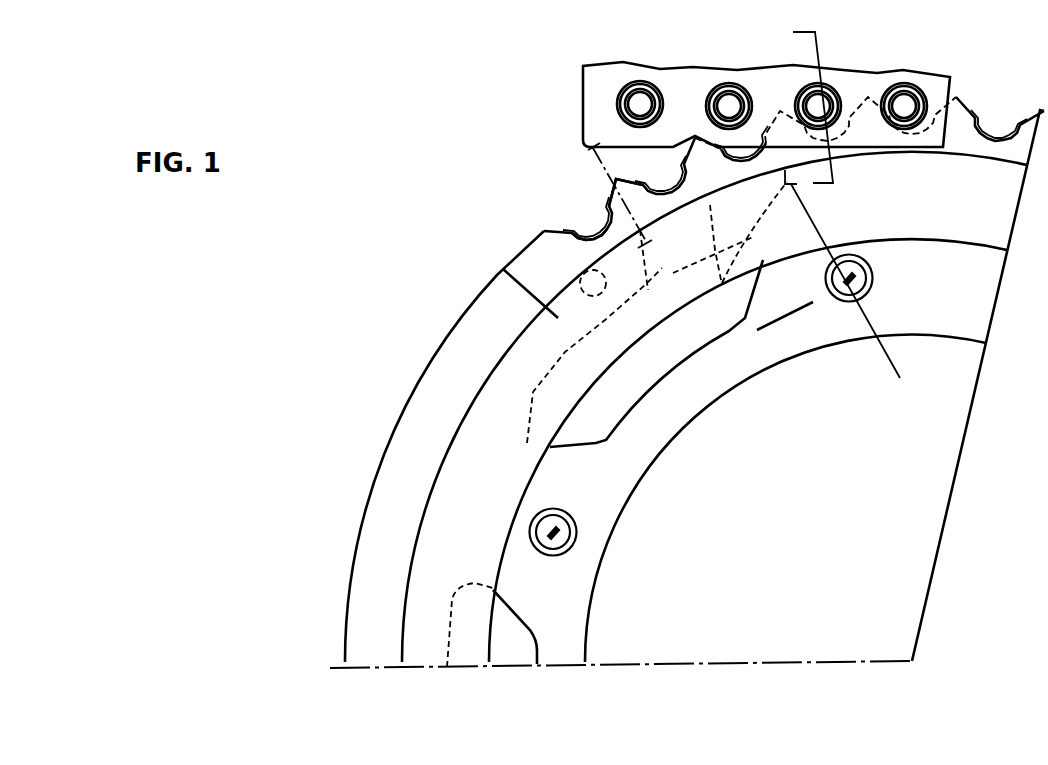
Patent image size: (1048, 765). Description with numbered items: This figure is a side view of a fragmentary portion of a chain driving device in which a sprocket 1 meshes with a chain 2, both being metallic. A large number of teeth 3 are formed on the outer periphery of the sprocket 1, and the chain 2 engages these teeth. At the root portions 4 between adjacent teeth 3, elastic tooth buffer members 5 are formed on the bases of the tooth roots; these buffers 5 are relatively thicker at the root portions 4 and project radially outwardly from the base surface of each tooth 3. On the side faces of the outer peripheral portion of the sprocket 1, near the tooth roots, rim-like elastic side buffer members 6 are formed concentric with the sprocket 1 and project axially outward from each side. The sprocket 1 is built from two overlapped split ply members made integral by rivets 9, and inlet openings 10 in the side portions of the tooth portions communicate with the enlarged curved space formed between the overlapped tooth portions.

The sprocket 1 is at (483, 311).
The chain 2 is at (657, 78).
The teeth 3 is at (608, 177).
The root portions 4 is at (582, 208).
The tooth buffer members 5 is at (570, 232).
The side buffer members 6 is at (503, 265).
The rivets 9 is at (577, 535).
The inlet openings 10 is at (633, 337).